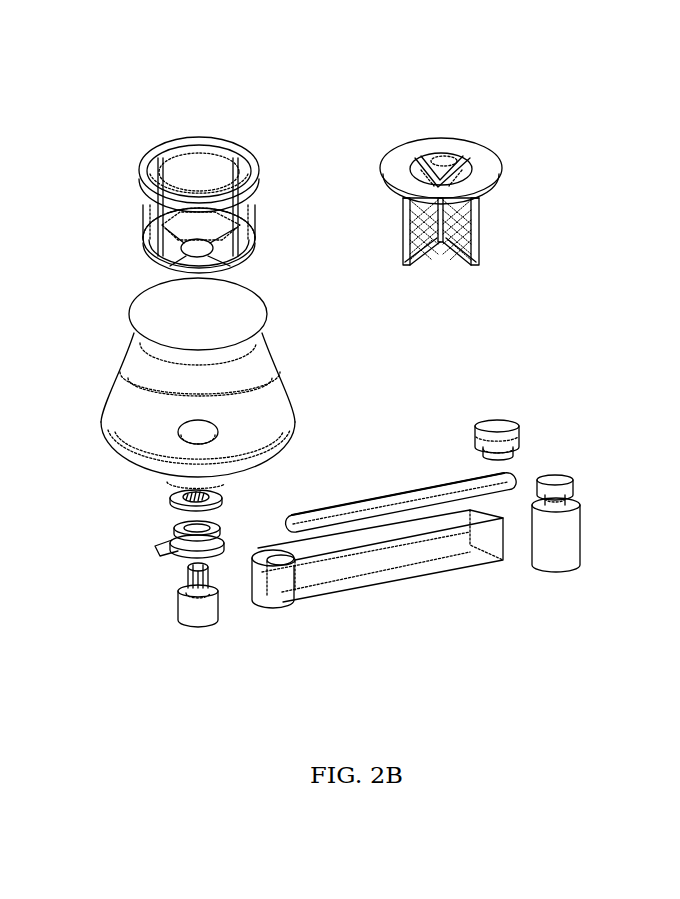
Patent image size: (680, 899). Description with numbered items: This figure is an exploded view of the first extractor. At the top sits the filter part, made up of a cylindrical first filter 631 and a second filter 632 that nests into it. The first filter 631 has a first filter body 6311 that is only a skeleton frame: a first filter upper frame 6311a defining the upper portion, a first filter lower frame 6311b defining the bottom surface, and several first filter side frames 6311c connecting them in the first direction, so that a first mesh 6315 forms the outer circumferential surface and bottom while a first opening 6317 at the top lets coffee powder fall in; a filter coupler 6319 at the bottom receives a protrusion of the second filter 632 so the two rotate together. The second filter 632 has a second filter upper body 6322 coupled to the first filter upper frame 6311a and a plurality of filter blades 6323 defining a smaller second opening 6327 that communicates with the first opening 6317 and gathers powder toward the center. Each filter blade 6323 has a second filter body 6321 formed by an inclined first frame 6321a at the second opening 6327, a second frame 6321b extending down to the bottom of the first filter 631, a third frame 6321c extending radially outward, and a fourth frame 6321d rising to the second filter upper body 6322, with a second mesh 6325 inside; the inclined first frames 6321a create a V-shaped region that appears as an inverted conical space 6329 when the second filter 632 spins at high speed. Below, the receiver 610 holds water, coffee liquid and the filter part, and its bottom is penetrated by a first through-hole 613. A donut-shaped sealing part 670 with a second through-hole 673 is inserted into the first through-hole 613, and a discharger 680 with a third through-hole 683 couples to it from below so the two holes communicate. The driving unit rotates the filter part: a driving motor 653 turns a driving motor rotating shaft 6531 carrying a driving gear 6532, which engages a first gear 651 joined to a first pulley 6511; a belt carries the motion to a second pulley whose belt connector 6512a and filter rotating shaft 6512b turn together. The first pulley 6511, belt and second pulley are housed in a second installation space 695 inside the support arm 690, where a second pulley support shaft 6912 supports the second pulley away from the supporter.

The first filter 631 is at (161, 120).
The first filter body 6311 is at (247, 134).
The first filter upper frame 6311a is at (140, 158).
The first filter lower frame 6311b is at (165, 266).
The first filter side frames 6311c is at (156, 176).
The first mesh 6315 is at (142, 208).
The first opening 6317 is at (197, 168).
The filter coupler 6319 is at (183, 246).
The second filter 632 is at (420, 126).
The second filter body 6321 is at (396, 258).
The first frame 6321a is at (430, 163).
The second frame 6321b is at (448, 258).
The third frame 6321c is at (422, 260).
The fourth frame 6321d is at (402, 208).
The second filter upper body 6322 is at (487, 172).
The filter blades 6323 is at (481, 204).
The second mesh 6325 is at (476, 220).
The second opening 6327 is at (440, 150).
The space of inverted conical shape 6329 is at (460, 153).
The receiver 610 is at (128, 364).
The first through-hole 613 is at (198, 430).
The second through-hole 673 is at (195, 484).
The sealing part 670 is at (170, 494).
The third through-hole 683 is at (196, 520).
The discharger 680 is at (166, 540).
The belt connector 6512a is at (178, 617).
The filter rotating shaft 6512b is at (186, 576).
The first gear 651 is at (519, 436).
The first pulley 6511 is at (514, 453).
The driving motor 653 is at (565, 554).
The driving motor rotating shaft 6531 is at (570, 499).
The driving gear 6532 is at (578, 486).
The support arm 690 is at (355, 580).
The second installation space 695 is at (393, 556).
The second pulley support shaft 6912 is at (291, 588).